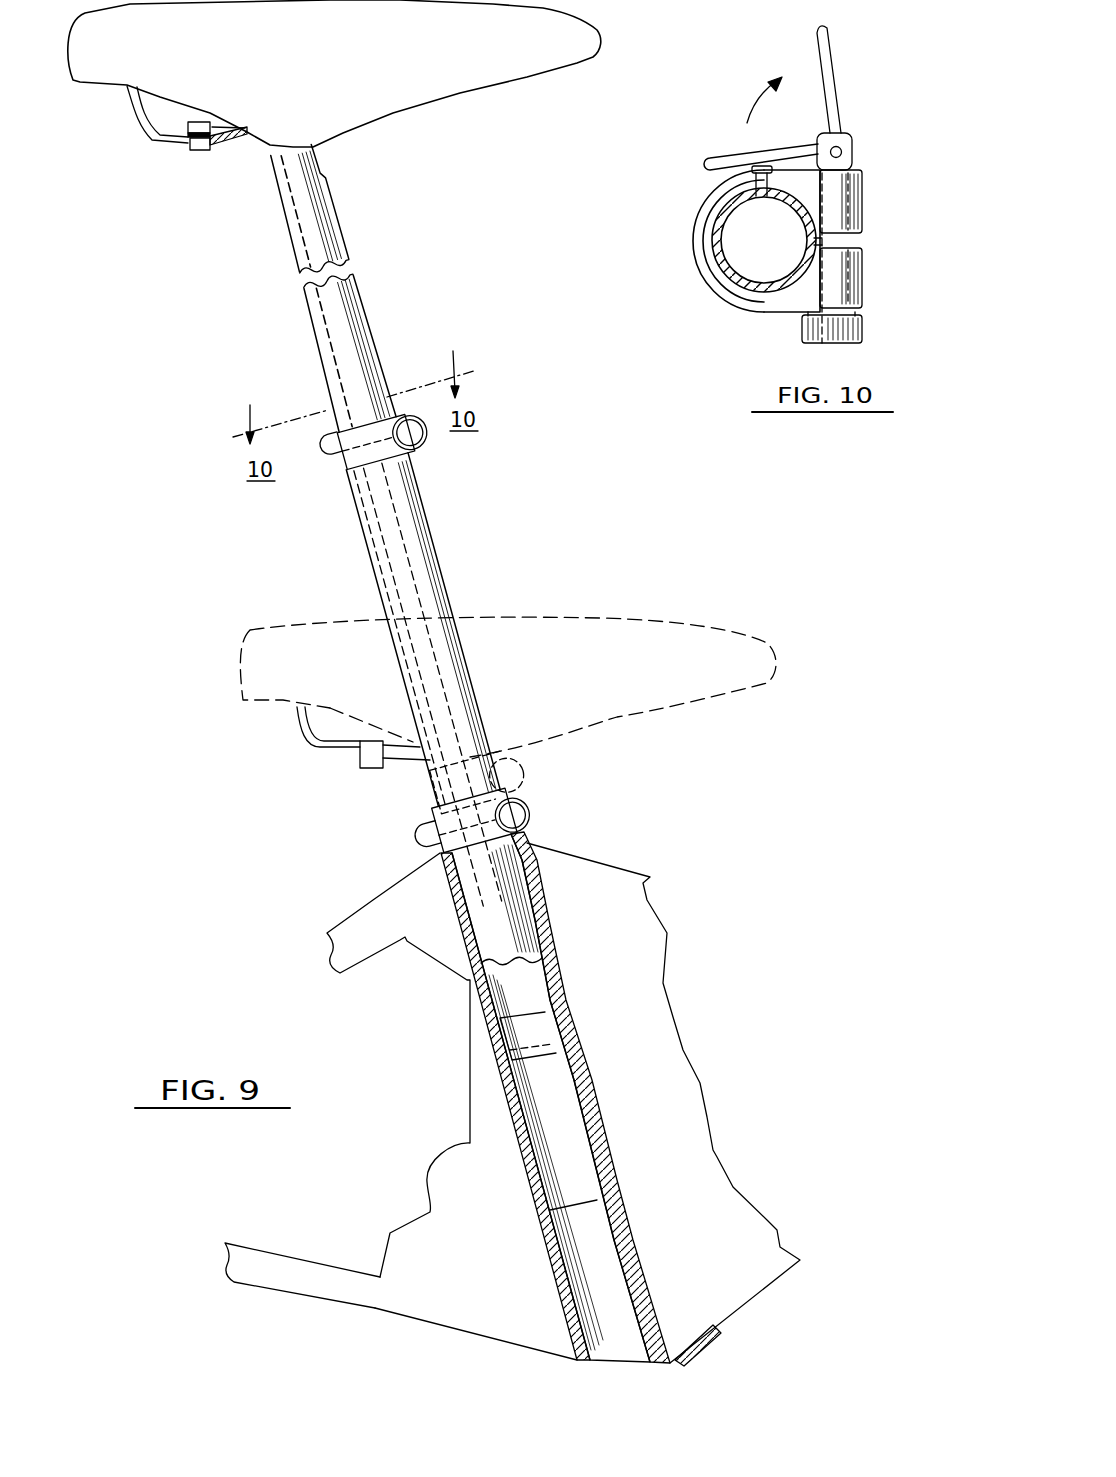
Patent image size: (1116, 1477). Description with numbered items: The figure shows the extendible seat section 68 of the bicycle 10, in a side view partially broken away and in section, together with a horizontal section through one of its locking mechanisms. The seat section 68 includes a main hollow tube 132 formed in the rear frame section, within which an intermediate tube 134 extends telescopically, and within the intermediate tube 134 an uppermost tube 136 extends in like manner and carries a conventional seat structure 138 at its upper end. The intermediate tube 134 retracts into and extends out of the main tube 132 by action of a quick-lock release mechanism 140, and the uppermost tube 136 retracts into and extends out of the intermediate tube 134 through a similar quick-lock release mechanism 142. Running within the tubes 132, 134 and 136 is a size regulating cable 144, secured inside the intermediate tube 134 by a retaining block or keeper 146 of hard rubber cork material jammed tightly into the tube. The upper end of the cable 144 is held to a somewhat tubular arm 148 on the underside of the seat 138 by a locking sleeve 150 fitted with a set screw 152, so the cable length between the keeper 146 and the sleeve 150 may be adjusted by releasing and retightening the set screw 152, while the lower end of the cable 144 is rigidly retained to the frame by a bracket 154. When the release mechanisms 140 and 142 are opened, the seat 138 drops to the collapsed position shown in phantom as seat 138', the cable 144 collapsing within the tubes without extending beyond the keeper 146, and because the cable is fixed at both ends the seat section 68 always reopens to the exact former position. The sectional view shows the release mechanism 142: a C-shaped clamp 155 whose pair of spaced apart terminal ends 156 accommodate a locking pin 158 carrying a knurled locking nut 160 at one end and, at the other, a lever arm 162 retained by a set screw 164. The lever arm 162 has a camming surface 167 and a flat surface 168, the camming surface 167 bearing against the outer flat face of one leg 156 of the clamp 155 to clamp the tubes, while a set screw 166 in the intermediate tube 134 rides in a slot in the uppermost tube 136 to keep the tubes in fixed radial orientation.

In FIG. 9, the bicycle frame 10 is at (640, 863).
In FIG. 9, the extendible seat section 68 is at (473, 540).
In FIG. 9, the main hollow tube 132 is at (563, 983).
In FIG. 9, the intermediate tube 134 is at (443, 593).
In FIG. 10, the intermediate tube 134 is at (728, 283).
In FIG. 9, the uppermost tube 136 is at (375, 320).
In FIG. 10, the uppermost tube 136 is at (715, 257).
In FIG. 9, the seat structure 138 is at (334, 73).
In FIG. 9, the seat in collapsed position 138' is at (508, 655).
In FIG. 9, the quick-lock release mechanism 140 is at (530, 812).
In FIG. 9, the quick-lock release mechanism 142 is at (428, 450).
In FIG. 10, the quick-lock release mechanism 142 is at (734, 322).
In FIG. 9, the size regulating cable 144 is at (403, 567).
In FIG. 9, the retaining block (keeper) 146 is at (520, 1030).
In FIG. 9, the tubular arm 148 is at (147, 127).
In FIG. 9, the locking sleeve 150 is at (200, 151).
In FIG. 9, the set screw 152 is at (197, 121).
In FIG. 9, the bracket 154 is at (700, 1347).
In FIG. 10, the C-shaped clamp 155 is at (693, 231).
In FIG. 10, the terminal ends (legs) 156 is at (862, 207).
In FIG. 10, the locking pin 158 is at (863, 173).
In FIG. 9, the knurled locking nut 160 is at (408, 425).
In FIG. 10, the knurled locking nut 160 is at (863, 330).
In FIG. 9, the lever arm 162 is at (327, 417).
In FIG. 10, the lever arm 162 is at (707, 163).
In FIG. 10, the set screw 164 is at (841, 133).
In FIG. 10, the set screw 166 is at (762, 166).
In FIG. 10, the camming surface 167 is at (832, 178).
In FIG. 10, the flat surface 168 is at (851, 153).